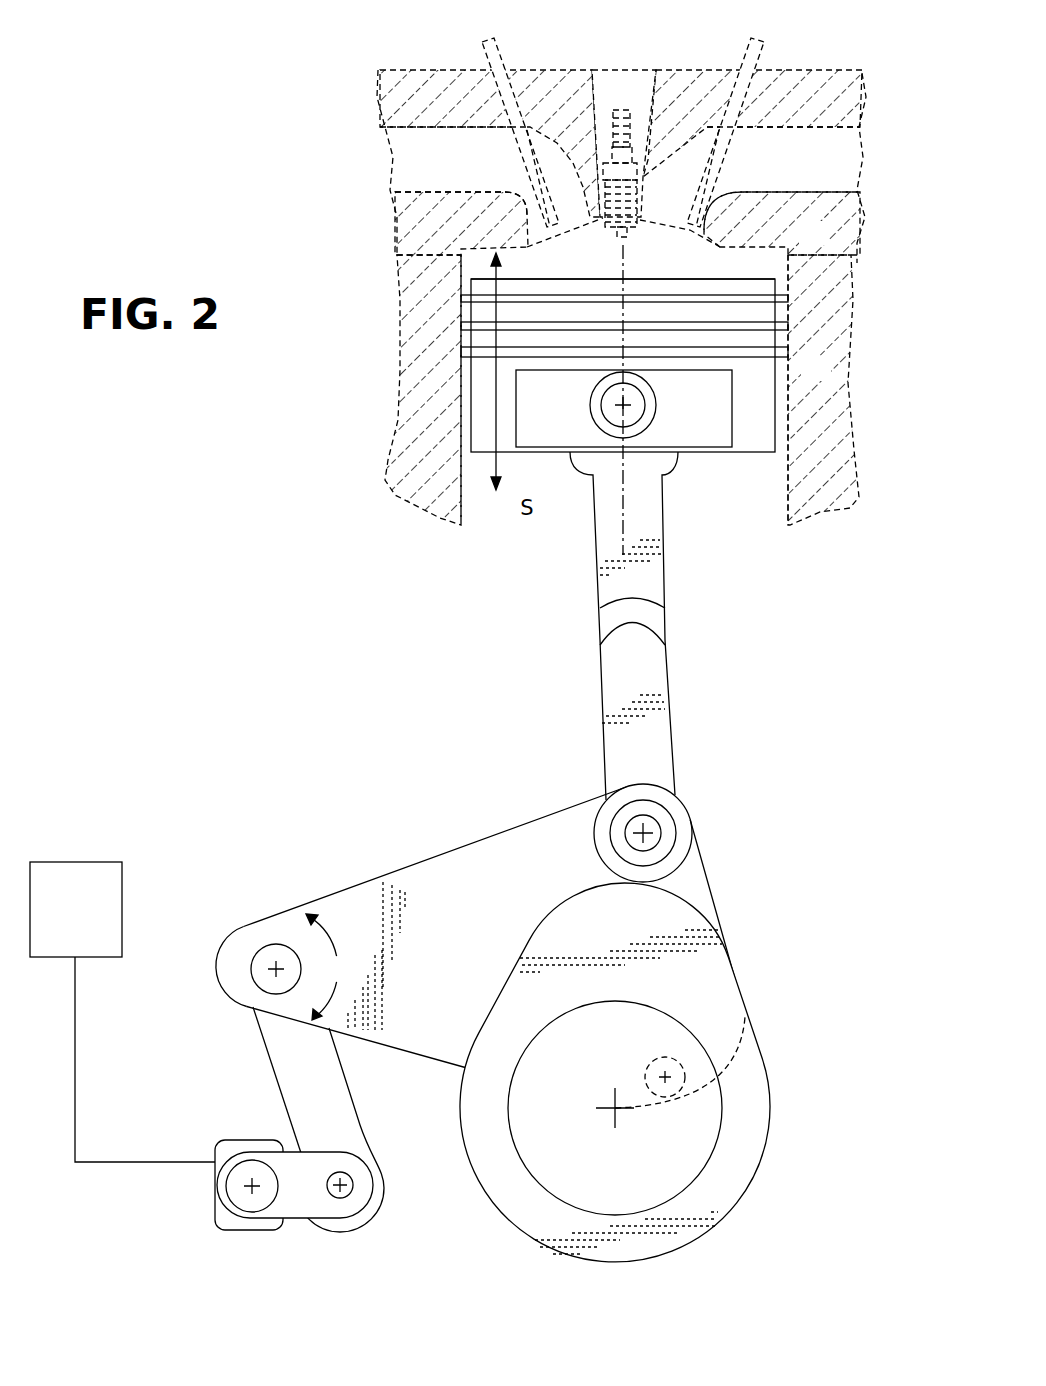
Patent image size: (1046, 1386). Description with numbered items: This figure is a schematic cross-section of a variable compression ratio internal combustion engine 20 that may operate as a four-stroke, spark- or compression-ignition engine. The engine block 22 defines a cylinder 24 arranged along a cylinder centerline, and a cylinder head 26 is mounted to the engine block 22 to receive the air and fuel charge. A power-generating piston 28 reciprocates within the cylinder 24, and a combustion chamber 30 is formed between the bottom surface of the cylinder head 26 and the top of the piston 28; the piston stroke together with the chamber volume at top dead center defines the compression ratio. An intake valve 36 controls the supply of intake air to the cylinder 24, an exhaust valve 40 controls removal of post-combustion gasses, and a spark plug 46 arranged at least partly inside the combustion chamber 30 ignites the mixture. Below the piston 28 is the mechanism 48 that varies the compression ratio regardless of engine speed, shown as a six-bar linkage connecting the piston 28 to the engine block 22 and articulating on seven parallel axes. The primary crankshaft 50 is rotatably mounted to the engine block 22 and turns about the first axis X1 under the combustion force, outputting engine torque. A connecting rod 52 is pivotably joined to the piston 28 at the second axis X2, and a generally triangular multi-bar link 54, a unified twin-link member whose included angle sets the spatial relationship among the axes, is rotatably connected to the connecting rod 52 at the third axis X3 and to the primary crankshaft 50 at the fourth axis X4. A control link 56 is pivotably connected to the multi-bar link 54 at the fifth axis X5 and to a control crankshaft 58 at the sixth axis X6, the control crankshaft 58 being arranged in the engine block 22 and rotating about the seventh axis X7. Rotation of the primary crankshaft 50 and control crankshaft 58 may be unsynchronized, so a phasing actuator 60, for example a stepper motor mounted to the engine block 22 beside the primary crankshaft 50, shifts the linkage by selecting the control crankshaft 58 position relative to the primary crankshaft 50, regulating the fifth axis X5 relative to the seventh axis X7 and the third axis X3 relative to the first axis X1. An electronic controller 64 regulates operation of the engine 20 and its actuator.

The internal combustion engine 20 is at (708, 619).
The engine block 22 is at (622, 390).
The cylinder 24 is at (792, 322).
The cylinder head 26 is at (621, 166).
The piston 28 is at (703, 279).
The combustion chamber 30 is at (624, 346).
The intake valve 36 is at (543, 215).
The exhaust valve 40 is at (716, 215).
The spark plug 46 is at (594, 75).
The mechanism 48 is at (326, 808).
The primary crankshaft 50 is at (733, 977).
The connecting rod 52 is at (606, 527).
The multi-bar link 54 is at (303, 1220).
The control link 56 is at (272, 1068).
The control crankshaft 58 is at (520, 825).
The phasing actuator 60 is at (232, 1140).
The electronic controller 64 is at (122, 1012).
The first axis X1 is at (620, 1110).
The second axis X2 is at (628, 404).
The third axis X3 is at (650, 833).
The fourth axis X4 is at (655, 1066).
The fifth axis X5 is at (276, 967).
The sixth axis X6 is at (342, 1190).
The seventh axis X7 is at (252, 1189).